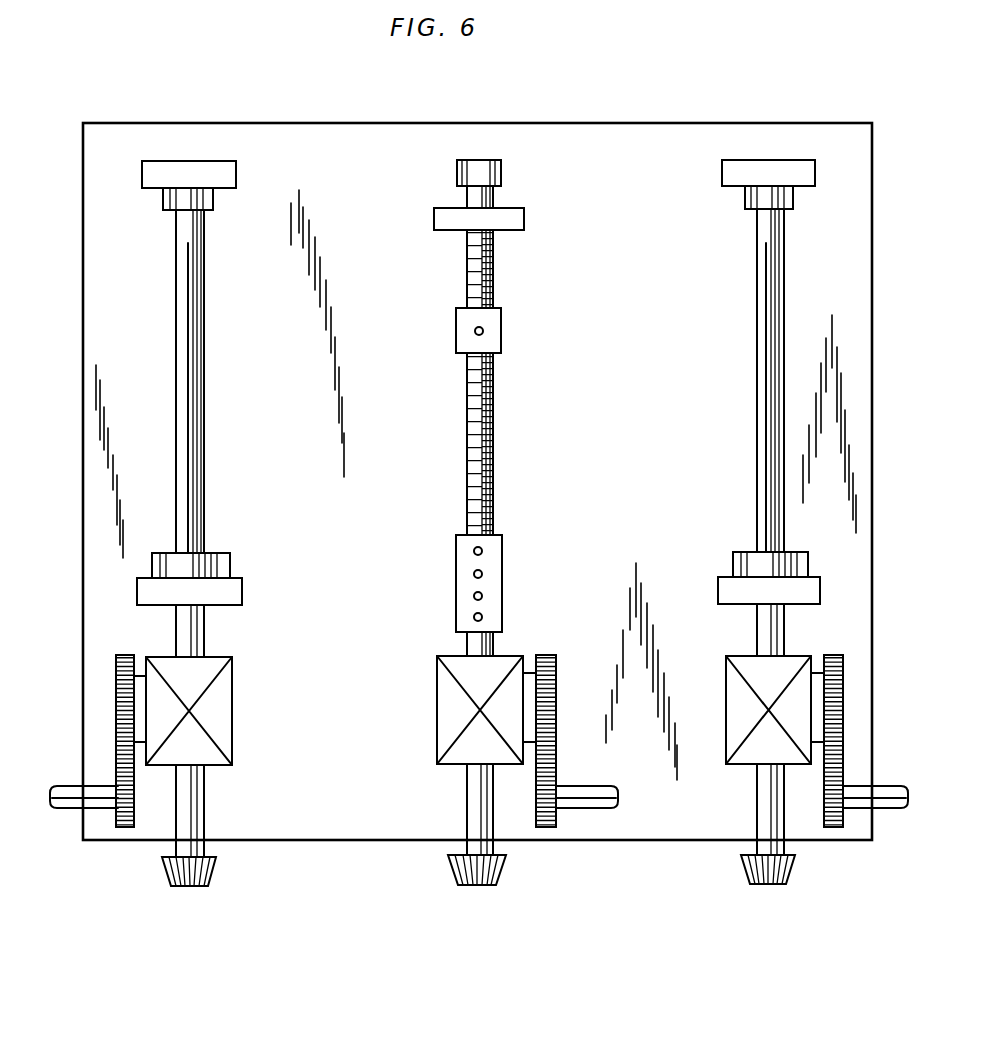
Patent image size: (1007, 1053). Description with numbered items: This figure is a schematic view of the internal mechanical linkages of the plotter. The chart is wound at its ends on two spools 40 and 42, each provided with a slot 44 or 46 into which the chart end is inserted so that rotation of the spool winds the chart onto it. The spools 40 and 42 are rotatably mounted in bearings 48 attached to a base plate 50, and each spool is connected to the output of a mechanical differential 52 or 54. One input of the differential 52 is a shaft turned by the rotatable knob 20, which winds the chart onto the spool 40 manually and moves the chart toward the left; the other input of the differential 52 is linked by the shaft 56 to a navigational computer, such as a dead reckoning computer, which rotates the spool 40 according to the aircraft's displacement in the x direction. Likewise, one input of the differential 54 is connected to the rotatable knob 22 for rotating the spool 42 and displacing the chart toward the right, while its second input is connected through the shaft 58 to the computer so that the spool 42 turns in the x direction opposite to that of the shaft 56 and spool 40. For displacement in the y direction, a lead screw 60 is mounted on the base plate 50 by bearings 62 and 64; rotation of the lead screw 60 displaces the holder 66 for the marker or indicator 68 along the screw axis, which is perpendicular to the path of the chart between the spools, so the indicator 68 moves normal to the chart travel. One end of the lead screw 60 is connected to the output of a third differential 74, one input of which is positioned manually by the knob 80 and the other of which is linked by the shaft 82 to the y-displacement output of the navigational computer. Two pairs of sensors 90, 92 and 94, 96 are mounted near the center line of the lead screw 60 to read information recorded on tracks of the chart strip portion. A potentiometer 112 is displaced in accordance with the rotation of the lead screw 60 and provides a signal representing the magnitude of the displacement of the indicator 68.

The base plate 50 is at (278, 128).
The bearings 48 is at (236, 175).
The spool 40 is at (205, 270).
The slot 44 is at (190, 368).
The spool 42 is at (757, 237).
The slot 46 is at (768, 307).
The bearing 64 is at (502, 178).
The potentiometer 112 is at (524, 220).
The lead screw 60 is at (494, 265).
The holder 66 is at (502, 330).
The marker or indicator 68 is at (472, 331).
The bearing 62 is at (505, 618).
The sensor 90 is at (473, 574).
The sensor 92 is at (473, 617).
The sensor 94 is at (483, 551).
The sensor 96 is at (483, 596).
The mechanical differential 52 is at (233, 734).
The third differential 74 is at (437, 742).
The mechanical differential 54 is at (728, 742).
The shaft 56 is at (71, 811).
The shaft 82 is at (588, 795).
The shaft 58 is at (892, 788).
The rotatable knob 20 is at (211, 883).
The knob 80 is at (497, 875).
The rotatable knob 22 is at (785, 884).